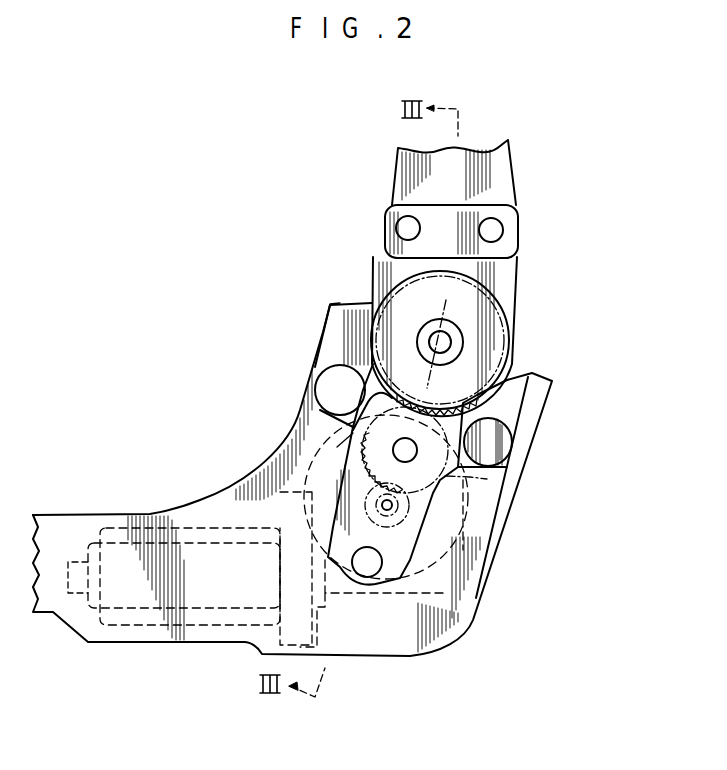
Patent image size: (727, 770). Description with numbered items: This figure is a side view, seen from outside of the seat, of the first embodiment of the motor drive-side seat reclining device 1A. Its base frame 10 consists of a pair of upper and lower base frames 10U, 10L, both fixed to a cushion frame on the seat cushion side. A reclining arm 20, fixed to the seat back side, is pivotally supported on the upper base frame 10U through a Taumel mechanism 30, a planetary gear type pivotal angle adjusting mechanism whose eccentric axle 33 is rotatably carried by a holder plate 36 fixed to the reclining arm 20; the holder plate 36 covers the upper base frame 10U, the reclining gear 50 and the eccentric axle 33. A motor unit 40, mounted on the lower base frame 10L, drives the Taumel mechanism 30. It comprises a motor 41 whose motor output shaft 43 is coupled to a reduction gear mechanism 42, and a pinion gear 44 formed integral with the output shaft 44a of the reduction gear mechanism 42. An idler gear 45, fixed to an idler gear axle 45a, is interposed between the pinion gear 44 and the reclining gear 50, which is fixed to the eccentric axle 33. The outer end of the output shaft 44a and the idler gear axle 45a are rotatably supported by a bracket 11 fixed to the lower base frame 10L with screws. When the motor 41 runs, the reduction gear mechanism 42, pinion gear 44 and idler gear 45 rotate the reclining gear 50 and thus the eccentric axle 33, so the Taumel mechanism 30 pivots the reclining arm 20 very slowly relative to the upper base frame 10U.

The seat reclining device 1A is at (318, 331).
The base frame 10 is at (248, 343).
The upper base frame 10U is at (338, 357).
The lower base frame 10L is at (322, 418).
The bracket 11 is at (487, 479).
The reclining arm 20 is at (500, 184).
The Taumel mechanism 30 is at (479, 325).
The eccentric axle 33 is at (452, 346).
The holder plate 36 is at (506, 282).
The motor unit 40 is at (140, 628).
The motor 41 is at (222, 590).
The reduction gear mechanism 42 is at (469, 511).
The motor output shaft 43 is at (451, 640).
The pinion gear 44 is at (330, 455).
The output shaft 44a is at (440, 525).
The idler gear 45 is at (490, 442).
The idler gear axle 45a is at (338, 446).
The reclining gear 50 is at (440, 412).